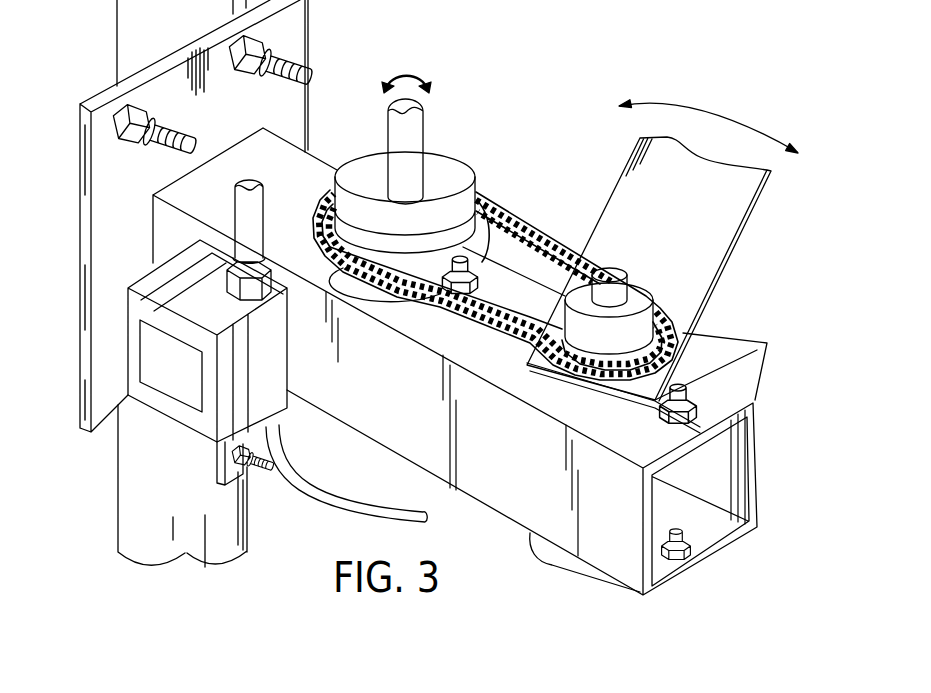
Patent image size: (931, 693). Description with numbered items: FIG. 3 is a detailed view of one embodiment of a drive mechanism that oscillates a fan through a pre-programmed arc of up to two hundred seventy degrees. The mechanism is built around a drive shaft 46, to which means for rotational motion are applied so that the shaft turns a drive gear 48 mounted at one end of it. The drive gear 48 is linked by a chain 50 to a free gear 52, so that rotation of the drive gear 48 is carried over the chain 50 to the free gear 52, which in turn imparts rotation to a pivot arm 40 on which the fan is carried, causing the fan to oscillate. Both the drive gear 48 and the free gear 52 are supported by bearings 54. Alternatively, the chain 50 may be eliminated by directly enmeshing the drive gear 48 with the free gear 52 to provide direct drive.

The pivot arm 40 is at (737, 236).
The drive shaft 46 is at (417, 122).
The drive gear 48 is at (443, 167).
The chain 50 is at (514, 203).
The free gear 52 is at (697, 326).
The bearings 54 is at (478, 273).